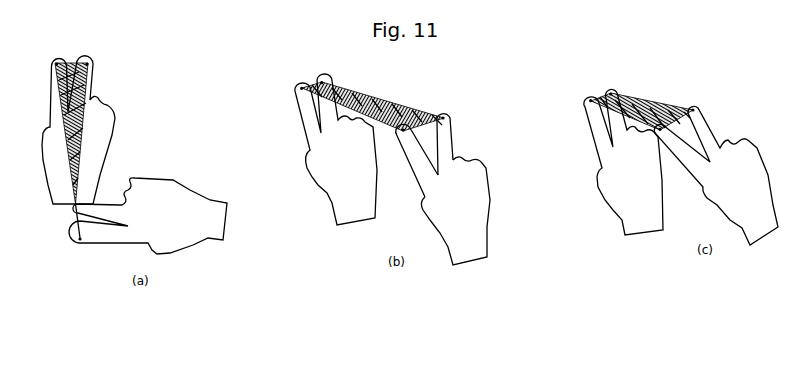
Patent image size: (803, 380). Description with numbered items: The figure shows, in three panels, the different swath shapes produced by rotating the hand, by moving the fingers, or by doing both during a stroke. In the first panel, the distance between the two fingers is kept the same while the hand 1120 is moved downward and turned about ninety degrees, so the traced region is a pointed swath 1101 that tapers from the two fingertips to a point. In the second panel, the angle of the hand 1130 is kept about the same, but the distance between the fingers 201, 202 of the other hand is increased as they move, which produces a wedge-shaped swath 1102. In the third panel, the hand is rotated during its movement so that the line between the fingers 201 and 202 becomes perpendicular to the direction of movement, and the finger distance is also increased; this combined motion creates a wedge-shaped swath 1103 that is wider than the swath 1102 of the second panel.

The pointed swath 1101 is at (85, 85).
The hand 1120 is at (89, 130).
The wedge-shaped swath 1102 is at (357, 93).
The hand 1130 is at (316, 167).
The finger 201 is at (419, 177).
The finger 202 is at (454, 152).
The wedge-shaped swath 1103 is at (640, 98).